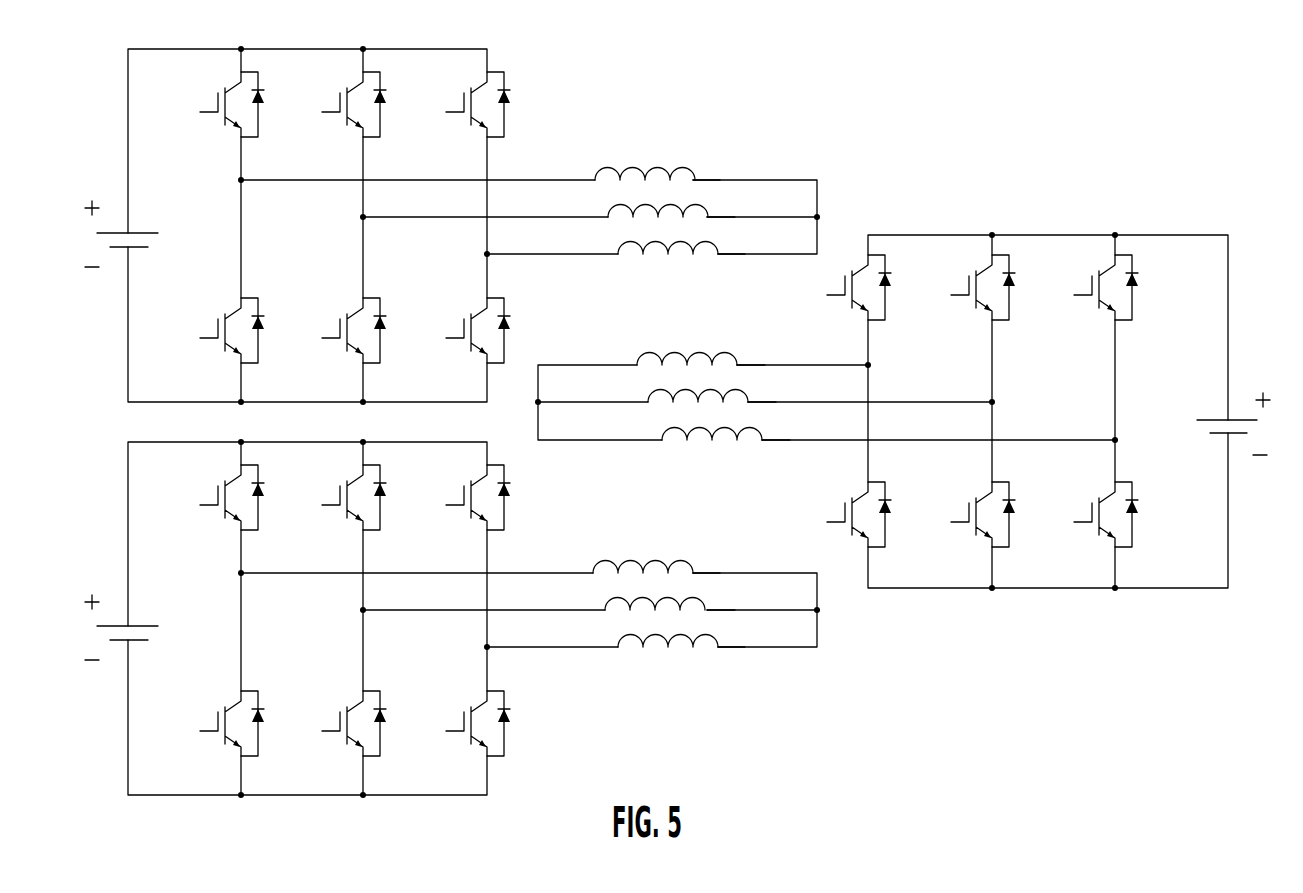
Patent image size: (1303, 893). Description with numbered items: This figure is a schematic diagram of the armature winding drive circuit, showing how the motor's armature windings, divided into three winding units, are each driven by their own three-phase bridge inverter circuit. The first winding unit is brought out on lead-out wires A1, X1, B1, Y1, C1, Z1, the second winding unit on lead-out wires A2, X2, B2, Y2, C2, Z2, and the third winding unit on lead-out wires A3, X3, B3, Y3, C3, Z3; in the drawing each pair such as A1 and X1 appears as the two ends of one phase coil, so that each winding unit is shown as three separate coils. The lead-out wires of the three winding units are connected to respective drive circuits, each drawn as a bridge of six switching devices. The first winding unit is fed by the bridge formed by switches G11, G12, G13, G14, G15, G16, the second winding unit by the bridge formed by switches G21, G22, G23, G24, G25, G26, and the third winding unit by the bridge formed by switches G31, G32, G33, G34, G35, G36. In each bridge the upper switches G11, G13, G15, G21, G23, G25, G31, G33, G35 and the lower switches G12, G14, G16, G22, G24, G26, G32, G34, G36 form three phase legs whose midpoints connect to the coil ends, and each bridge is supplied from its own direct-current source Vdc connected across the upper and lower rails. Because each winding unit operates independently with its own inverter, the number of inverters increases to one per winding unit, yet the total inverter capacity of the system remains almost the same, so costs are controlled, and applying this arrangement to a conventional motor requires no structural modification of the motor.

The IGBT switch G11 of first inverter G11 is at (205, 101).
The IGBT switch G12 of first inverter G12 is at (205, 327).
The IGBT switch G13 of first inverter G13 is at (327, 101).
The IGBT switch G14 of first inverter G14 is at (327, 327).
The IGBT switch G15 of first inverter G15 is at (451, 101).
The IGBT switch G16 of first inverter G16 is at (451, 327).
The IGBT switch G21 of second inverter G21 is at (832, 287).
The IGBT switch G22 of second inverter G22 is at (832, 514).
The IGBT switch G23 of second inverter G23 is at (956, 287).
The IGBT switch G24 of second inverter G24 is at (956, 514).
The IGBT switch G25 of second inverter G25 is at (1079, 287).
The IGBT switch G26 of second inverter G26 is at (1079, 514).
The IGBT switch G31 of third inverter G31 is at (205, 494).
The IGBT switch G32 of third inverter G32 is at (205, 720).
The IGBT switch G33 of third inverter G33 is at (327, 494).
The IGBT switch G34 of third inverter G34 is at (327, 720).
The IGBT switch G35 of third inverter G35 is at (451, 494).
The IGBT switch G36 of third inverter G36 is at (451, 720).
The lead-out wire for the first winding unit A1 is at (624, 161).
The lead-out wire for the first winding unit B1 is at (635, 198).
The lead-out wire for the first winding unit C1 is at (645, 235).
The lead-out wire for the first winding unit X1 is at (717, 161).
The lead-out wire for the first winding unit Y1 is at (729, 198).
The lead-out wire for the first winding unit Z1 is at (738, 235).
The lead-out wire for the second winding unit A2 is at (761, 346).
The lead-out wire for the second winding unit B2 is at (771, 383).
The lead-out wire for the second winding unit C2 is at (782, 421).
The lead-out wire for the second winding unit X2 is at (663, 346).
The lead-out wire for the second winding unit Y2 is at (673, 383).
The lead-out wire for the second winding unit Z2 is at (688, 421).
The lead-out wire for the third winding unit A3 is at (620, 554).
The lead-out wire for the third winding unit B3 is at (631, 591).
The lead-out wire for the third winding unit C3 is at (645, 628).
The lead-out wire for the third winding unit X3 is at (715, 554).
The lead-out wire for the third winding unit Y3 is at (722, 591).
The lead-out wire for the third winding unit Z3 is at (739, 628).
The DC bus voltage source Vdc is at (677, 424).